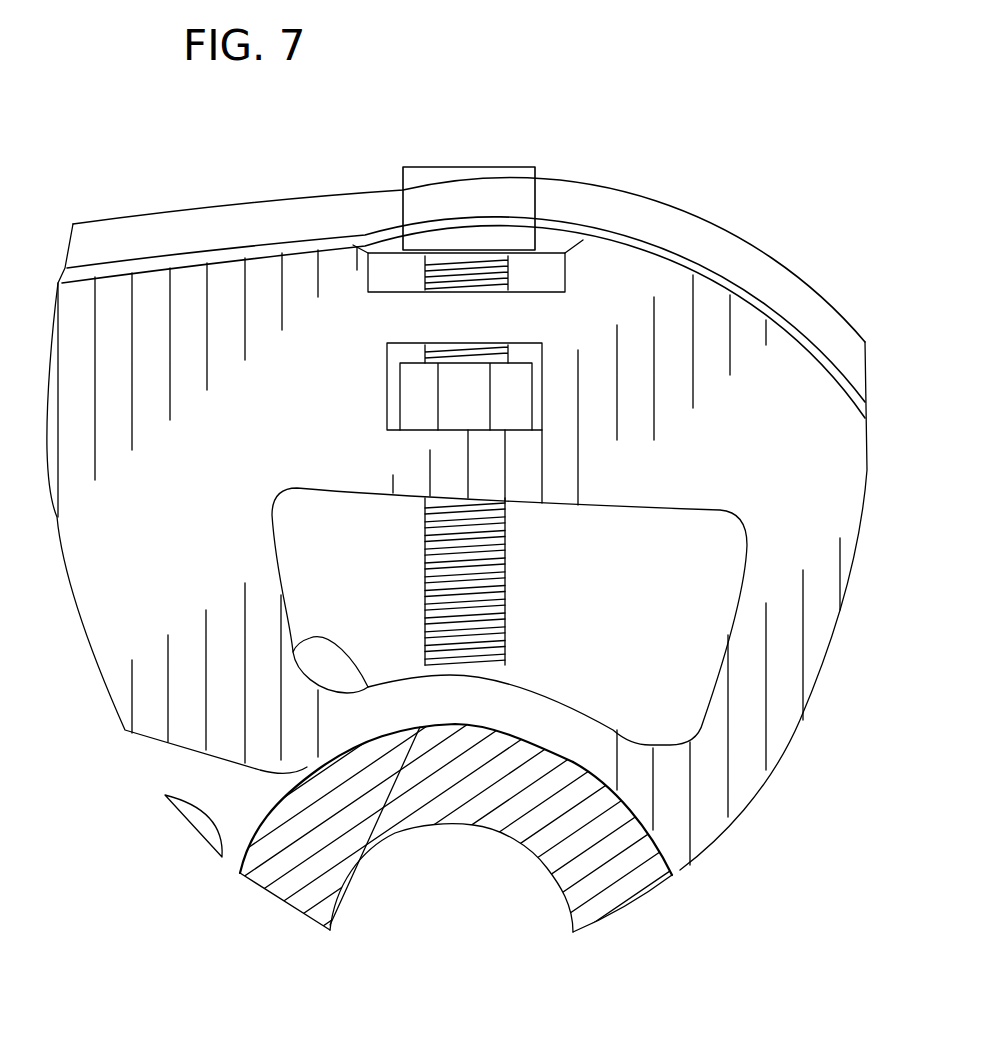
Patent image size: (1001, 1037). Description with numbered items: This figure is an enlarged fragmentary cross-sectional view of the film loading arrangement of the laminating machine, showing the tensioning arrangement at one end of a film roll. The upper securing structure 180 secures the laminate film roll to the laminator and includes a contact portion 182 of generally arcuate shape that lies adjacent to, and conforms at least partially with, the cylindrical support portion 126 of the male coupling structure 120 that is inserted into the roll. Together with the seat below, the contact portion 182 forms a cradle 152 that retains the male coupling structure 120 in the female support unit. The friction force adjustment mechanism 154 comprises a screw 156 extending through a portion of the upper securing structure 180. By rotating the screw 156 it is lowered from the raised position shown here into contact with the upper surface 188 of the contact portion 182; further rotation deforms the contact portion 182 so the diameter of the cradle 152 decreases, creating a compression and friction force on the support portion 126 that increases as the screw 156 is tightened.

The male coupling structure 120 is at (598, 880).
The male support portion 126 is at (667, 877).
The cradle 152 is at (250, 808).
The friction force adjustment mechanism 154 is at (452, 148).
The screw 156 is at (482, 200).
The upper securing structure 180 is at (763, 387).
The contact portion 182 is at (275, 893).
The upper surface 188 is at (293, 648).